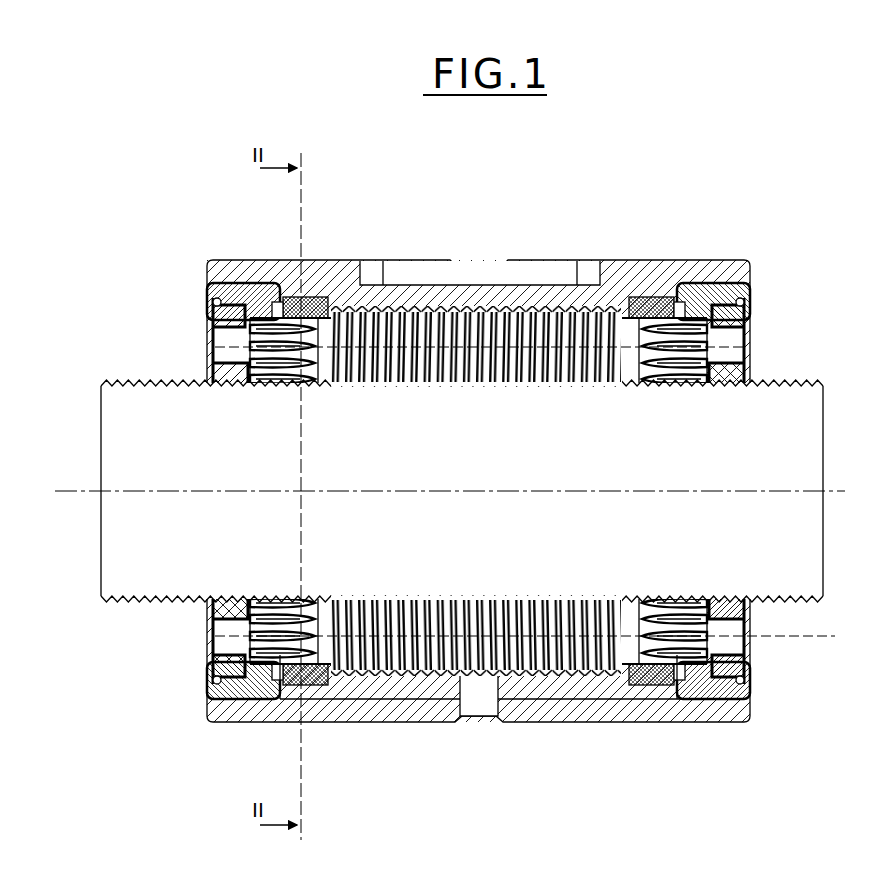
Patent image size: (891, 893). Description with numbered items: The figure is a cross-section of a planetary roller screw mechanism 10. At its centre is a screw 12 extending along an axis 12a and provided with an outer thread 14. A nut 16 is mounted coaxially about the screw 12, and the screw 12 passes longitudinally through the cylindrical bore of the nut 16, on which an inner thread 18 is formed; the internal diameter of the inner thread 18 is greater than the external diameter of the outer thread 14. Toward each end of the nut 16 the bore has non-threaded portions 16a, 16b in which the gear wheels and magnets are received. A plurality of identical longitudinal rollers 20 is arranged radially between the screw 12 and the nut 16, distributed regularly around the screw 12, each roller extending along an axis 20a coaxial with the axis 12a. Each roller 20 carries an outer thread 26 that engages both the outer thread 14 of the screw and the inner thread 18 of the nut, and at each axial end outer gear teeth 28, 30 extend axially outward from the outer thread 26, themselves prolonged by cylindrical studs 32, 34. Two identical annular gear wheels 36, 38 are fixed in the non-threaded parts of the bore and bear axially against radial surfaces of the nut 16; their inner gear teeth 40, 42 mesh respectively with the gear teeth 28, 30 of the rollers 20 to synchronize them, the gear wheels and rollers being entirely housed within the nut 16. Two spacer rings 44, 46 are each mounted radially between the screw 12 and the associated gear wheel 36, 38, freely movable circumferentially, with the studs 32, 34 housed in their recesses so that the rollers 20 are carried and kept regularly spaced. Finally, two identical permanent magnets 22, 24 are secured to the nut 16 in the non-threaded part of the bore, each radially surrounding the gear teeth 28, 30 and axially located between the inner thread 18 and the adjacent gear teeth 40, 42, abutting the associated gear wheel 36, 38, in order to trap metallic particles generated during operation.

The planetary roller screw mechanism 10 is at (607, 190).
The screw 12 is at (120, 380).
The axis of the screw 12a is at (852, 490).
The outer thread 14 is at (810, 380).
The nut 16 is at (352, 258).
The first housing end 16a is at (337, 680).
The second housing end 16b is at (622, 680).
The inner thread 18 is at (470, 322).
The longitudinal rollers 20 is at (410, 325).
The axis of the roller 20a is at (830, 638).
The magnet 22 is at (313, 298).
The magnet 24 is at (650, 298).
The outer thread of the roller 26 is at (530, 700).
The outer gear teeth 28 is at (245, 626).
The outer gear teeth 30 is at (700, 620).
The cylindrical stud 32 is at (245, 657).
The cylindrical stud 34 is at (735, 648).
The annular gear wheel 36 is at (235, 692).
The annular gear wheel 38 is at (728, 690).
The inner gear teeth 40 is at (270, 657).
The inner gear teeth 42 is at (690, 690).
The spacer ring 44 is at (218, 320).
The spacer ring 46 is at (740, 320).